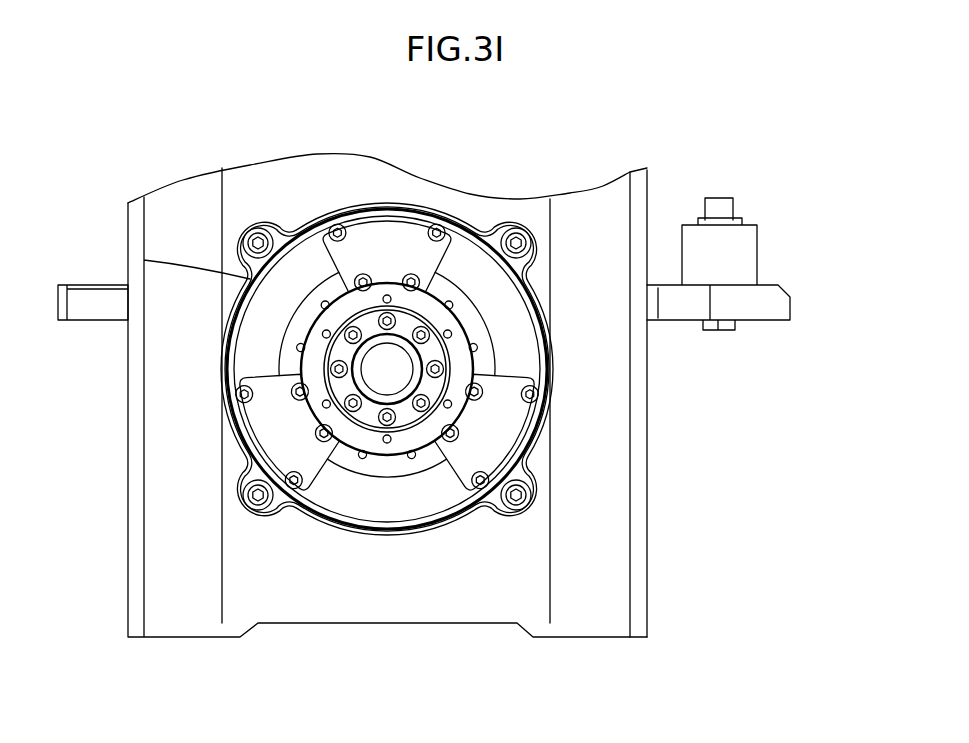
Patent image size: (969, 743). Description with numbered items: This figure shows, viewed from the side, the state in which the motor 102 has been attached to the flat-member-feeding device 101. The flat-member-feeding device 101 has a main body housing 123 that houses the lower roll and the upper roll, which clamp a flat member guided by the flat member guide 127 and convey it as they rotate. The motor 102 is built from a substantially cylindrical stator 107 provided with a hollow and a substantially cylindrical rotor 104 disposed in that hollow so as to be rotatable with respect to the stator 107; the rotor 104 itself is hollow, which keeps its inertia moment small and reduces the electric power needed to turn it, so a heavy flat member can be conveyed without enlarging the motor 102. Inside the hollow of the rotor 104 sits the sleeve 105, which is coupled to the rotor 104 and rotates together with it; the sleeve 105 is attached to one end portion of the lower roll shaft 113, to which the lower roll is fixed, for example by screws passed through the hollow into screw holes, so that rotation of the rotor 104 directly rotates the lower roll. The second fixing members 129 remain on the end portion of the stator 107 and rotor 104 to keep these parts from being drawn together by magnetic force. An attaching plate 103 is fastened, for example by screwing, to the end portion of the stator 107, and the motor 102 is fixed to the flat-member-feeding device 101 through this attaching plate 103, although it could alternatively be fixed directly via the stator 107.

The flat-member-feeding device 101 is at (520, 160).
The motor 102 is at (292, 210).
The attaching plate 103 is at (245, 219).
The rotor 104 is at (393, 463).
The sleeve 105 is at (325, 373).
The stator 107 is at (367, 512).
The lower roll shaft 113 is at (378, 362).
The main body housing 123 is at (647, 173).
The flat member guide 127 is at (770, 303).
The second fixing members 129 is at (387, 238).